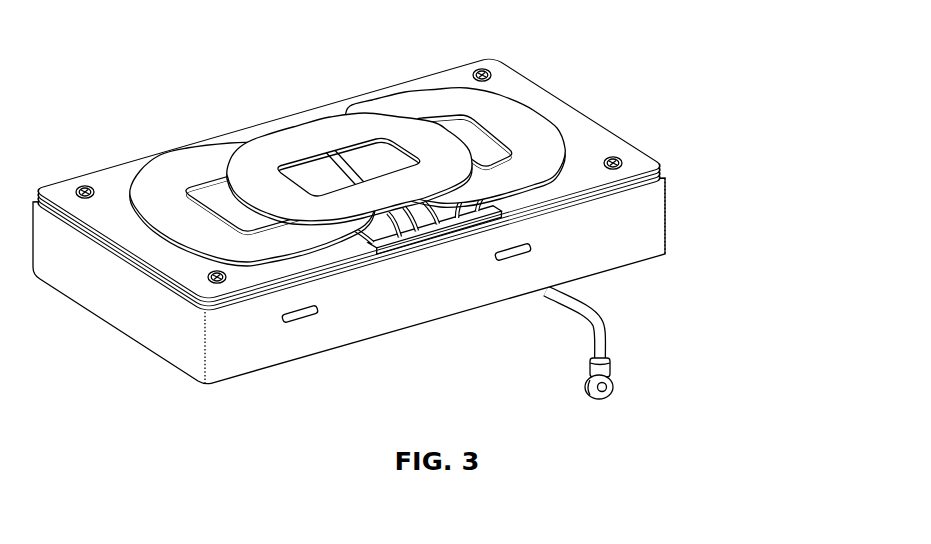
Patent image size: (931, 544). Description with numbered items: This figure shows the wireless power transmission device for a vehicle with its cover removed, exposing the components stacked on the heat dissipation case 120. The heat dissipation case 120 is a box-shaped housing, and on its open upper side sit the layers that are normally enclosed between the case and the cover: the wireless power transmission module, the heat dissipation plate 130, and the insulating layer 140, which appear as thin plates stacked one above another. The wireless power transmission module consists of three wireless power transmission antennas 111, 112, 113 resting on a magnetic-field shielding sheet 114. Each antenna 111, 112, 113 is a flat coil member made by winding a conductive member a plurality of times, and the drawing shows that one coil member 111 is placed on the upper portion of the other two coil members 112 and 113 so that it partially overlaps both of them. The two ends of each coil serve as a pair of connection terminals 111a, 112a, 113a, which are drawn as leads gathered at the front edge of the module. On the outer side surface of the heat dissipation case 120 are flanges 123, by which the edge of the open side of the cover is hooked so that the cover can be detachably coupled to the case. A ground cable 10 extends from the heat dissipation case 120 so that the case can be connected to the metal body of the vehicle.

The ground cable 10 is at (603, 342).
The wireless power transmission antenna 111 is at (297, 140).
The wireless power transmission antenna 112 is at (195, 165).
The wireless power transmission antenna 113 is at (407, 107).
The magnetic-field shielding sheet 114 is at (618, 148).
The heat dissipation plate 130 is at (643, 168).
The insulating layer 140 is at (661, 178).
The heat dissipation case 120 is at (670, 223).
The flange 123 is at (305, 320).
The connection terminals 112a is at (396, 249).
The connection terminals 111a is at (417, 242).
The connection terminals 113a is at (454, 232).